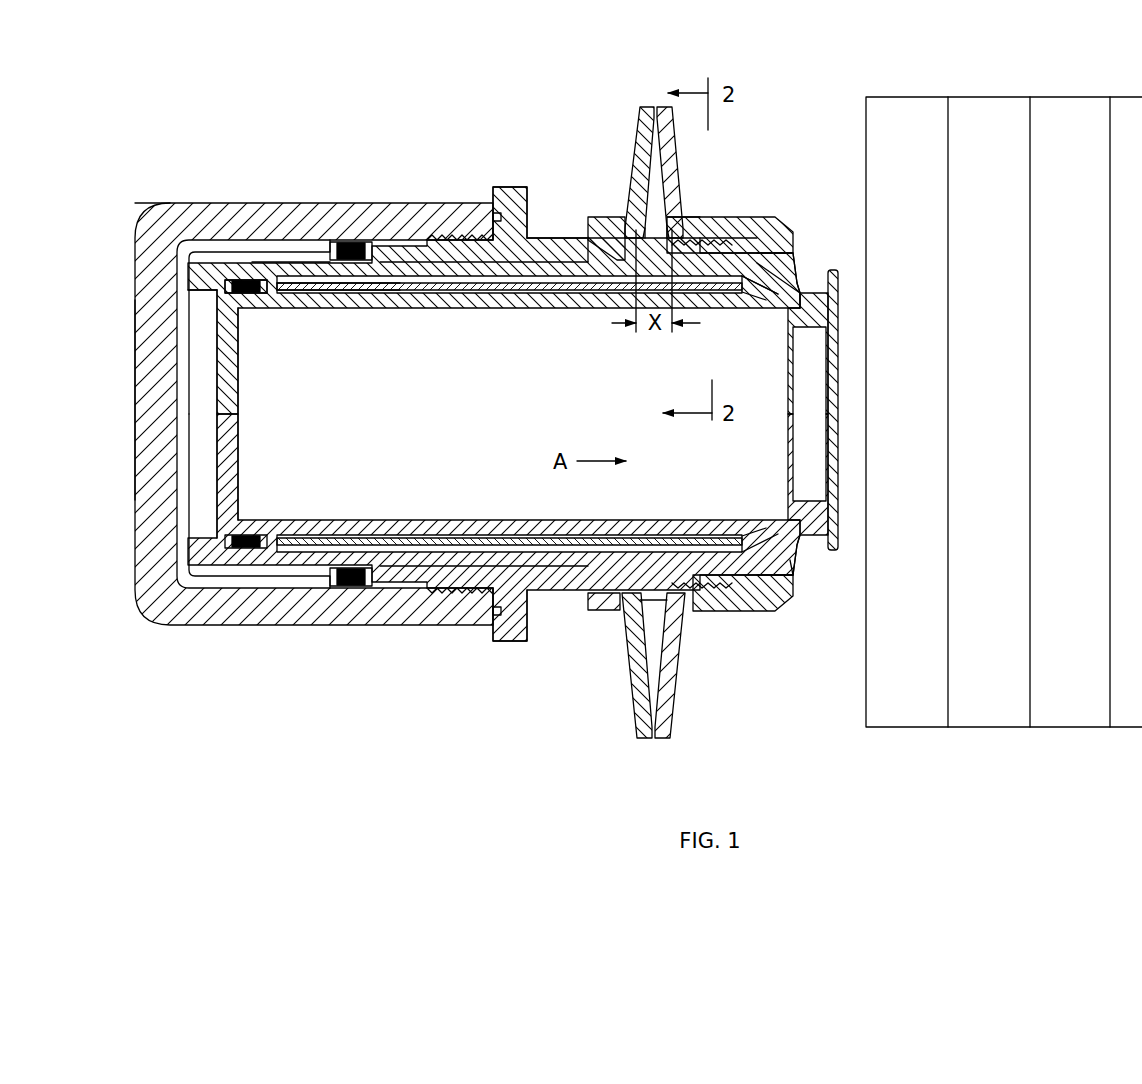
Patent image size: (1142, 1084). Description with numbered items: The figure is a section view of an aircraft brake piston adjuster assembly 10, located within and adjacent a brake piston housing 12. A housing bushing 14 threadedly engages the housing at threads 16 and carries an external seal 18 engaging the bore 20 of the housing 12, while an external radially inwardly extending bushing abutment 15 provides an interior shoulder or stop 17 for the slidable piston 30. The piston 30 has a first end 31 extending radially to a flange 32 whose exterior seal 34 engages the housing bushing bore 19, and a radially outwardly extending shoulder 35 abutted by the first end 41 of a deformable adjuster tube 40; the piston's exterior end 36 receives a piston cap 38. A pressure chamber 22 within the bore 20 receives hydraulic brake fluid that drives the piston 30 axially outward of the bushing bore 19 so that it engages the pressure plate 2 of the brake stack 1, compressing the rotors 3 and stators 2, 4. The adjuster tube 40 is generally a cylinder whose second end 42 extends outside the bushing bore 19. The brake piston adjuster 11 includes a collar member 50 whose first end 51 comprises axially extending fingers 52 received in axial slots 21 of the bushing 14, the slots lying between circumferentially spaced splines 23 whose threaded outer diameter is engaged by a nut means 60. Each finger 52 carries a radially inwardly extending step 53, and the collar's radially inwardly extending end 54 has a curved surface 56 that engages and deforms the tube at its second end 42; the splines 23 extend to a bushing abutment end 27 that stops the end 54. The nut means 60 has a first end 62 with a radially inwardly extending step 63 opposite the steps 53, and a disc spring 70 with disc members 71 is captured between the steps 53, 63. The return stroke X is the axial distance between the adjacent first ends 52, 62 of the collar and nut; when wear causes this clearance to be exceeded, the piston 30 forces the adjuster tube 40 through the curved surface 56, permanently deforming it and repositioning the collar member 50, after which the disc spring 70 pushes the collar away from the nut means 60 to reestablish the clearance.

The brake stack 1 is at (936, 758).
The pressure plate 2 is at (900, 722).
The rotors 3 is at (986, 722).
The stators 4 is at (1070, 722).
The aircraft piston adjuster assembly 10 is at (793, 106).
The brake piston adjuster 11 is at (770, 196).
The brake piston housing 12 is at (410, 202).
The housing bushing 14 is at (512, 186).
The bushing abutment 15 is at (796, 270).
The threads 16 is at (460, 236).
The interior shoulder or stop 17 is at (690, 292).
The external seal 18 is at (350, 242).
The housing bushing bore 19 is at (298, 262).
The bore 20 is at (268, 250).
The axial slots 21 is at (590, 263).
The pressure chamber 22 is at (216, 242).
The splines 23 is at (728, 244).
The bushing abutment end 27 is at (742, 592).
The piston 30 is at (440, 309).
The first end 31 is at (240, 410).
The flange 32 is at (228, 300).
The exterior seal 34 is at (252, 294).
The shoulder 35 is at (270, 294).
The exterior end 36 is at (790, 300).
The piston cap 38 is at (794, 428).
The adjuster tube 40 is at (520, 292).
The first end 41 is at (368, 292).
The second end 42 is at (762, 292).
The collar member 50 is at (830, 298).
The first end 51 is at (574, 212).
The fingers 52 is at (594, 230).
The step 53 is at (614, 228).
The radially inwardly extending end 54 is at (800, 568).
The curved surface 56 is at (790, 598).
The nut means 60 is at (790, 224).
The first end 62 is at (672, 172).
The step 63 is at (693, 222).
The disc spring 70 is at (645, 677).
The disc members 71 is at (633, 660).